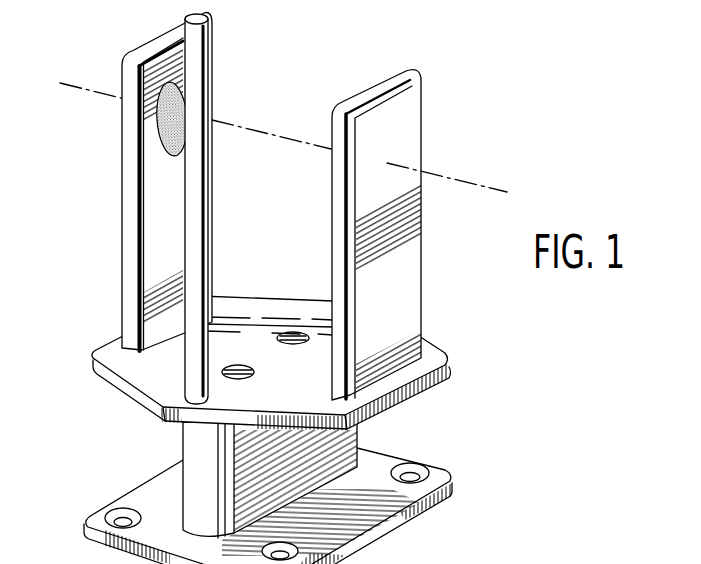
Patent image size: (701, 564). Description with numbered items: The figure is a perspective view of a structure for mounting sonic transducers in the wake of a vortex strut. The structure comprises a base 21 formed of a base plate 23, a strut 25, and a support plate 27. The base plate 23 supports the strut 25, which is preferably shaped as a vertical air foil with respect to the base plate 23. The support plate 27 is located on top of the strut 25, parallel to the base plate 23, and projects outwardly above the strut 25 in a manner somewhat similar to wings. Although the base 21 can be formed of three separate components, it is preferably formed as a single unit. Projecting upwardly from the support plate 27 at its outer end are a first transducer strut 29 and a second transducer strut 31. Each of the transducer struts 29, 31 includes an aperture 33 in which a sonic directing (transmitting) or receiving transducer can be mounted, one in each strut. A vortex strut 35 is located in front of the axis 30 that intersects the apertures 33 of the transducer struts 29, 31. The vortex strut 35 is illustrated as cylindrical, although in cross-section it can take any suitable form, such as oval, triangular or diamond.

The base 21 is at (283, 288).
The base plate 23 is at (120, 504).
The strut 25 is at (355, 440).
The support plate 27 is at (265, 307).
The first transducer strut 29 is at (130, 139).
The axis 30 is at (466, 169).
The second transducer strut 31 is at (408, 140).
The aperture 33 is at (167, 155).
The vortex strut 35 is at (196, 74).